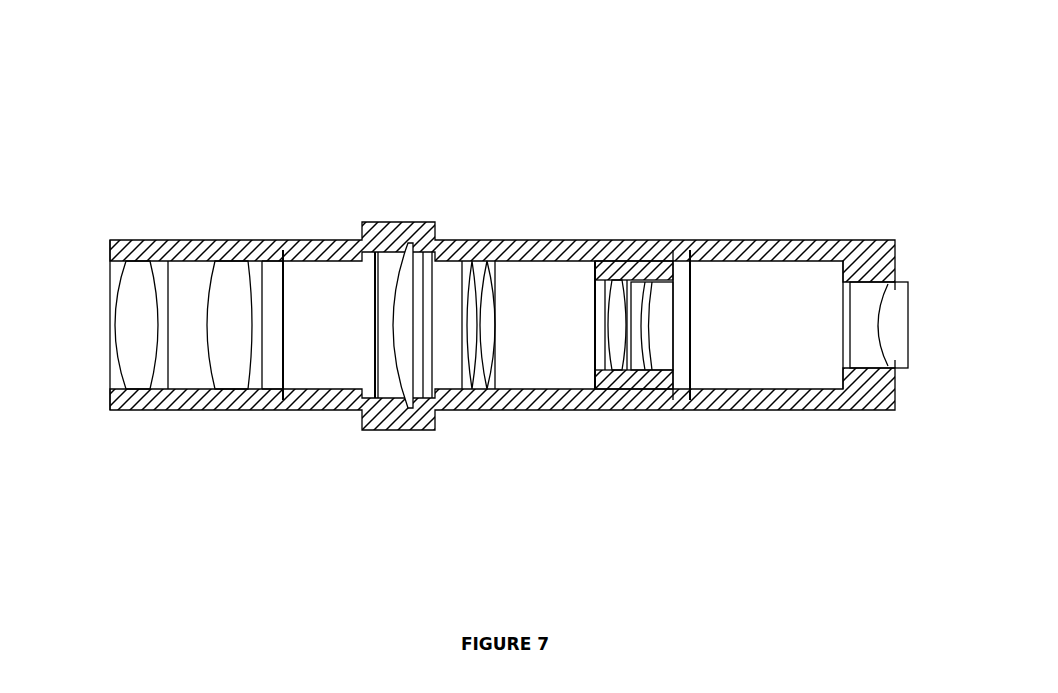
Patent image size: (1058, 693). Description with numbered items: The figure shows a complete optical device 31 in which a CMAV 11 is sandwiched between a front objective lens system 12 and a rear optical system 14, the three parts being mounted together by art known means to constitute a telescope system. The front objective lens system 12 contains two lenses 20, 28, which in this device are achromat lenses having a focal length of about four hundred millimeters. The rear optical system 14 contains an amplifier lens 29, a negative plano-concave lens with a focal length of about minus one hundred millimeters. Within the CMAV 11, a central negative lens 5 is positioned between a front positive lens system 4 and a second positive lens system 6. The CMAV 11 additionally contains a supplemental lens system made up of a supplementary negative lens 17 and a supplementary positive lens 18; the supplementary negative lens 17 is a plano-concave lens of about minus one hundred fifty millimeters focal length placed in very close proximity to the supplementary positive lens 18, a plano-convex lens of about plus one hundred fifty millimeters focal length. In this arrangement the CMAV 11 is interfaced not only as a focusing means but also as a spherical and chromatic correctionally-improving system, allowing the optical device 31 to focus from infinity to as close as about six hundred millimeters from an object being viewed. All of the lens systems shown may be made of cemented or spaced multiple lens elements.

The front positive lens system 4 is at (407, 367).
The central negative lens 5 is at (515, 420).
The second positive lens system 6 is at (682, 327).
The CMAV 11 is at (672, 165).
The front objective lens system 12 is at (108, 162).
The rear optical system 14 is at (907, 165).
The supplementary negative lens 17 is at (638, 308).
The supplementary positive lens 18 is at (658, 308).
The lens 20 is at (133, 287).
The lens 28 is at (234, 273).
The amplifier lens 29 is at (865, 298).
The optical device 31 is at (907, 487).